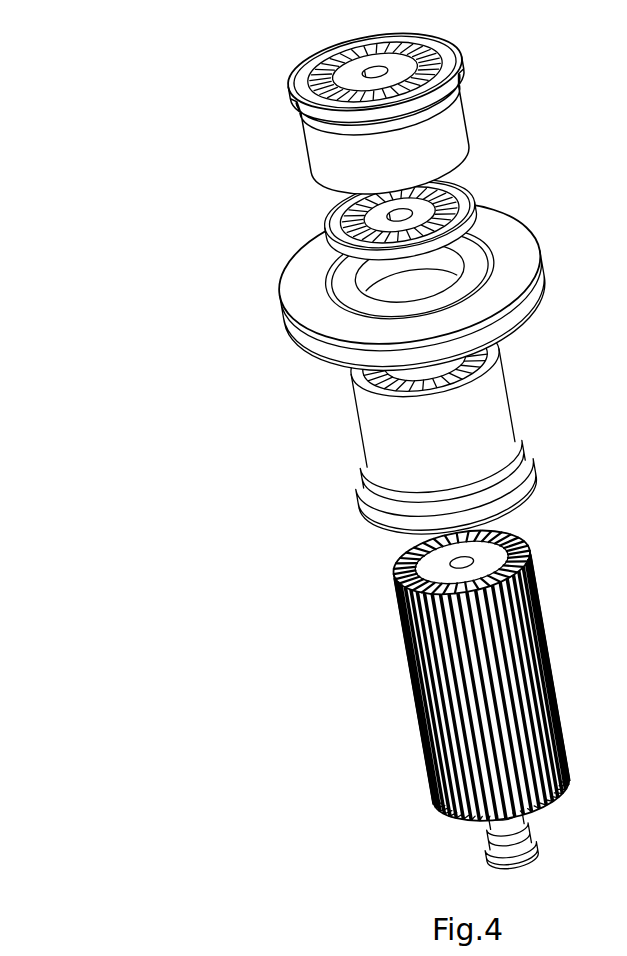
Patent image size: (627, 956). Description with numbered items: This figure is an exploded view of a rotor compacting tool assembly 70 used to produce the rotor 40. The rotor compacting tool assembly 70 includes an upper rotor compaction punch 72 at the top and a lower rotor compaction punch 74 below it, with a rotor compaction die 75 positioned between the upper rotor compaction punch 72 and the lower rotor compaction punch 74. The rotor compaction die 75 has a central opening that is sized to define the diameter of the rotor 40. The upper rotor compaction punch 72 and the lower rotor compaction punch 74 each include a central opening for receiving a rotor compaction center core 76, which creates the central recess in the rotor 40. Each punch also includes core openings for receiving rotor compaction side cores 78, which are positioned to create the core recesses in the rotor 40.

The rotor compacting tool assembly 70 is at (151, 104).
The upper rotor compaction punch 72 is at (463, 110).
The rotor 40 is at (470, 185).
The rotor compaction die 75 is at (540, 270).
The lower rotor compaction punch 74 is at (500, 405).
The rotor compaction side cores 78 is at (545, 645).
The rotor compaction center core 76 is at (520, 836).